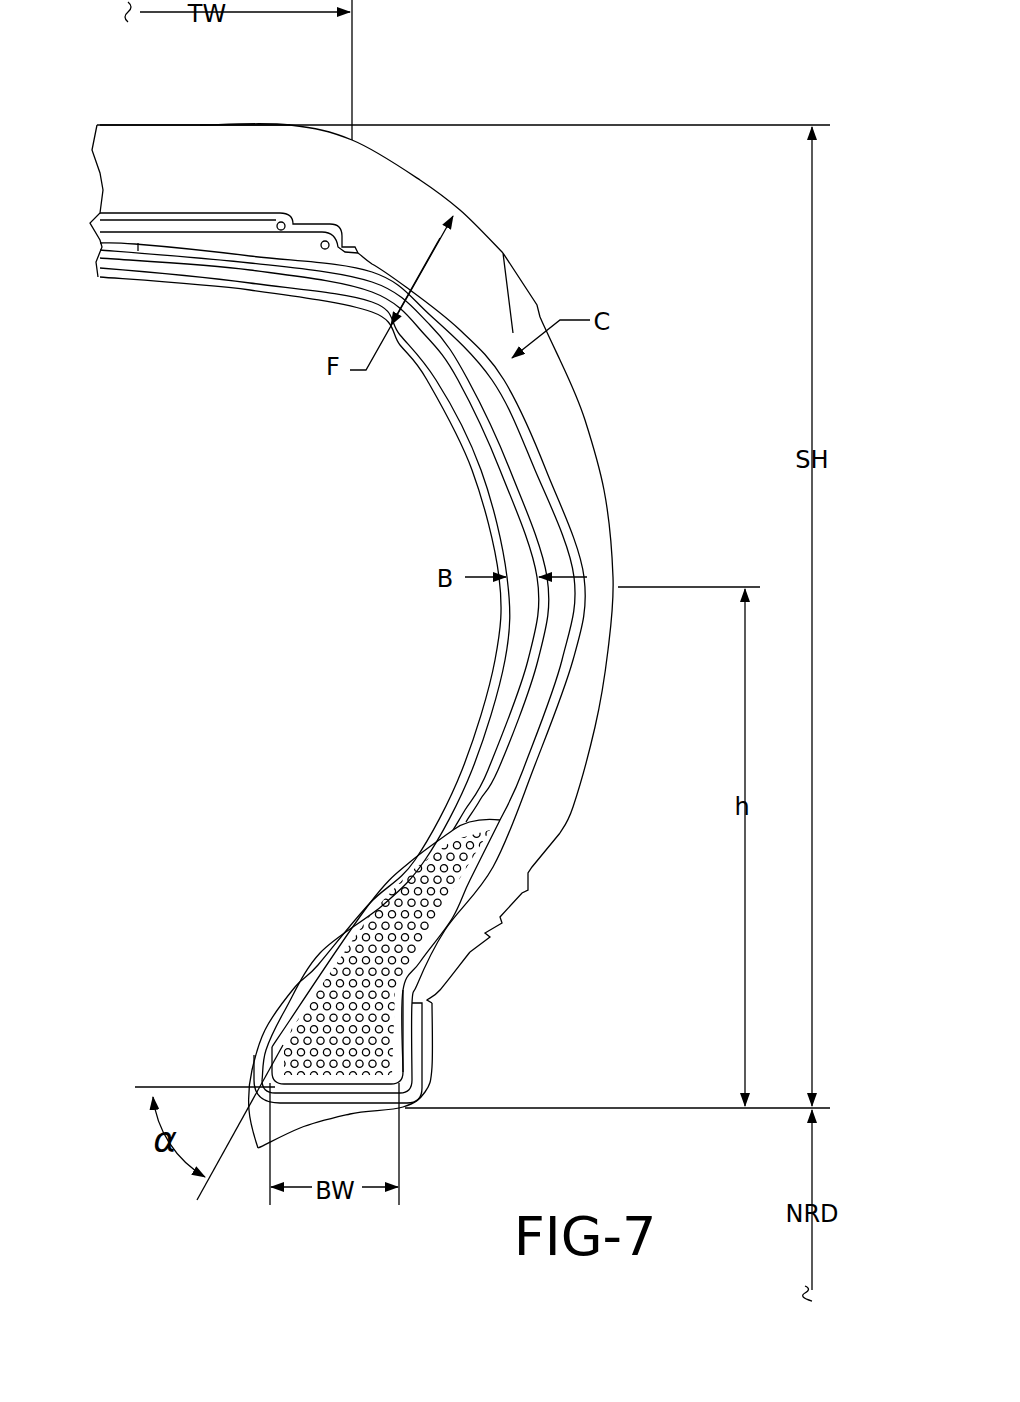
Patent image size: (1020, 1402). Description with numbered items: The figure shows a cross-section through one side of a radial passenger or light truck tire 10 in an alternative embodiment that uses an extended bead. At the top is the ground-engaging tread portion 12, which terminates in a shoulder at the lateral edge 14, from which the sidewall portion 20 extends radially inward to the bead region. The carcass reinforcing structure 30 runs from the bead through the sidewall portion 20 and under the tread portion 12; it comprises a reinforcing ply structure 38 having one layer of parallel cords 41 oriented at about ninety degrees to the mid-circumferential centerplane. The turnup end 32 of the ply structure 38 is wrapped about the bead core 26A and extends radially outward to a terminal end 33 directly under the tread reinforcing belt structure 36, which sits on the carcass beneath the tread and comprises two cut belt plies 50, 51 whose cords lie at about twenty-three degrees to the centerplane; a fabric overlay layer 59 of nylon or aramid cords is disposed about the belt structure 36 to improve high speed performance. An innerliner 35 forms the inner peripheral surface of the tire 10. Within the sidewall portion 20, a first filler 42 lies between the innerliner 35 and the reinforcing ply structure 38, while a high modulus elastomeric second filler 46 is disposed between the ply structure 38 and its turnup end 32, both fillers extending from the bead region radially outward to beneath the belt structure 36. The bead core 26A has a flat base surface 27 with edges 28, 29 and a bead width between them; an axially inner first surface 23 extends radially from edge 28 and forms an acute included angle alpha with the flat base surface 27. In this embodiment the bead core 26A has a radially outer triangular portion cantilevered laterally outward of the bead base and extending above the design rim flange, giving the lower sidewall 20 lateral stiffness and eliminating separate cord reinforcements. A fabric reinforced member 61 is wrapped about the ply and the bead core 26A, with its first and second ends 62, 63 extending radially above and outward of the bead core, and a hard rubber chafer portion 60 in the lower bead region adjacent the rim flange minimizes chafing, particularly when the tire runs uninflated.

The tire 10 is at (392, 97).
The tread portion 12 is at (123, 125).
The lateral edge 14 is at (357, 141).
The sidewall portion 20 is at (606, 549).
The axially inner first surface 23 is at (280, 1042).
The bead core 26A is at (392, 932).
The flat base surface 27 is at (367, 1092).
The edge 28 is at (303, 1092).
The edge 29 is at (401, 1077).
The carcass reinforcing structure 30 is at (186, 270).
The turnup end 32 is at (581, 623).
The terminal end 33 is at (140, 258).
The innerliner 35 is at (386, 888).
The tread reinforcing belt structure 36 is at (113, 211).
The reinforcing ply structure 38 is at (512, 445).
The cords 41 is at (572, 483).
The first filler 42 is at (513, 643).
The second filler 46 is at (556, 520).
The belt ply 50 is at (260, 223).
The belt ply 51 is at (263, 235).
The fabric overlay layer 59 is at (183, 213).
The chafer portion 60 is at (474, 953).
The fabric reinforced member 61 is at (296, 988).
The first end 62 is at (320, 953).
The second end 63 is at (418, 1003).